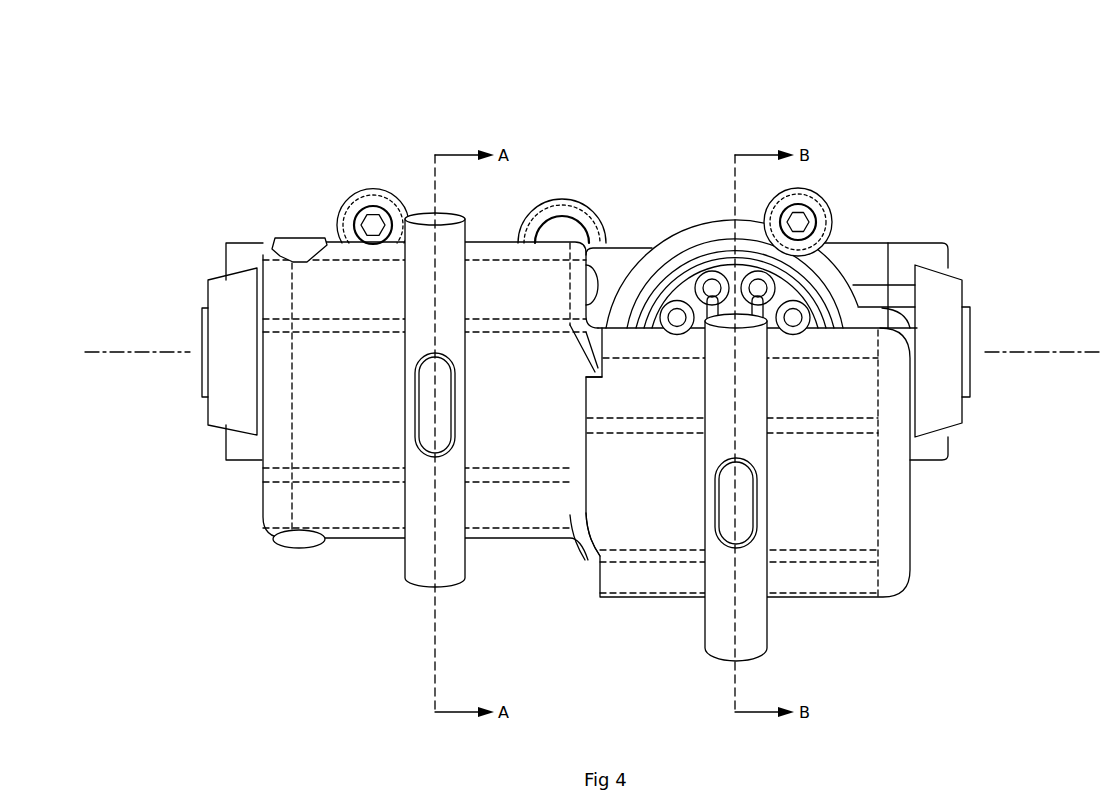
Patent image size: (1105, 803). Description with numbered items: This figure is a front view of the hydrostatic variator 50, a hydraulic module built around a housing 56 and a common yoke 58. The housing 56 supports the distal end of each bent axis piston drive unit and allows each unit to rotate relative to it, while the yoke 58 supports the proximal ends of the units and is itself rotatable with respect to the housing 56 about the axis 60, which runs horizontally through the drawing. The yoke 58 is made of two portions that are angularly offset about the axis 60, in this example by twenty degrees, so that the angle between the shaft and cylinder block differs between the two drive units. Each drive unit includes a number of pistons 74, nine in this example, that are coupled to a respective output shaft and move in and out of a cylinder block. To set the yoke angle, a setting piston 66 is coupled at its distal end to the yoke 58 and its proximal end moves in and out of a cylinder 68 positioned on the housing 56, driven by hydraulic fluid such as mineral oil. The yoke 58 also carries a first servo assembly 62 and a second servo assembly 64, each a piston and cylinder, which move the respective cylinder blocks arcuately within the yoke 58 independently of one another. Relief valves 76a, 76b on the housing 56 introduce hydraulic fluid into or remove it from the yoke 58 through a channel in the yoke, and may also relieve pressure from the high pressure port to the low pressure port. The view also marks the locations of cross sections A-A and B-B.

The hydrostatic variator 50 is at (232, 133).
The housing 56 is at (617, 247).
The yoke 58 is at (578, 432).
The axis 60 is at (1020, 350).
The first servo assembly 62 is at (425, 480).
The second servo assembly 64 is at (743, 565).
The setting piston 66 is at (550, 195).
The cylinder 68 is at (572, 193).
The pistons 74 is at (818, 277).
The relief valve 76a is at (275, 535).
The relief valve 76b is at (298, 245).